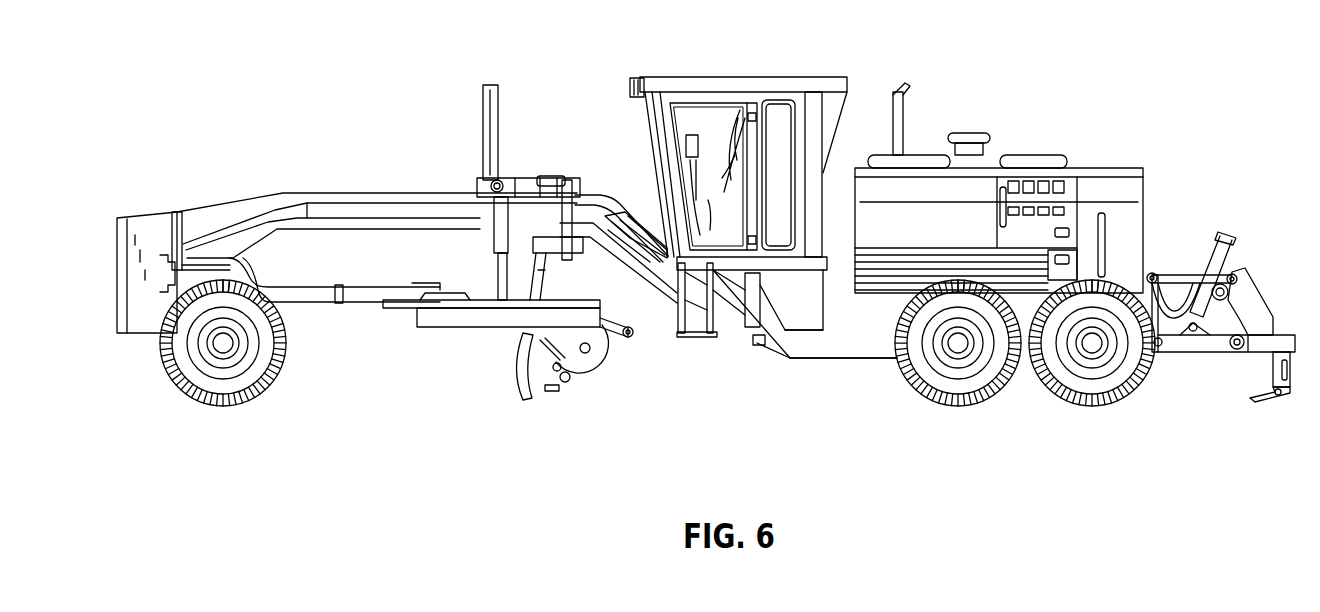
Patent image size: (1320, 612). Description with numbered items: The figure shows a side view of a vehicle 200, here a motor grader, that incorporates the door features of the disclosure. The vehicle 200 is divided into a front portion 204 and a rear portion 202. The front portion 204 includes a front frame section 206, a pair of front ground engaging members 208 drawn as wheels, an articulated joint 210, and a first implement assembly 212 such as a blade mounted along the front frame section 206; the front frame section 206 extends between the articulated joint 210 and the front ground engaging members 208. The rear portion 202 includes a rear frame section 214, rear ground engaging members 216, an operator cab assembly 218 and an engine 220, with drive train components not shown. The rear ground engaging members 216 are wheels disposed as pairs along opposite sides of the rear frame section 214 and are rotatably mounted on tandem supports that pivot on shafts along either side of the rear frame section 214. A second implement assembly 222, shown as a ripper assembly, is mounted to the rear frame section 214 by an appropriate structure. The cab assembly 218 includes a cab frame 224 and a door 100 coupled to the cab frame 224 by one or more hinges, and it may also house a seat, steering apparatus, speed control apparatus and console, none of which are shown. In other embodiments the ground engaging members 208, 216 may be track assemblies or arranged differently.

The door 100 is at (713, 127).
The vehicle 200 is at (923, 46).
The rear portion 202 is at (1100, 162).
The front portion 204 is at (358, 183).
The front frame section 206 is at (597, 193).
The front ground engaging members 208 is at (172, 383).
The articulated joint 210 is at (755, 345).
The first implement assembly 212 is at (523, 400).
The rear frame section 214 is at (860, 350).
The rear ground engaging members 216 is at (920, 393).
The operator cab assembly 218 is at (805, 76).
The engine 220 is at (970, 220).
The second implement assembly 222 is at (1245, 298).
The cab frame 224 is at (652, 87).